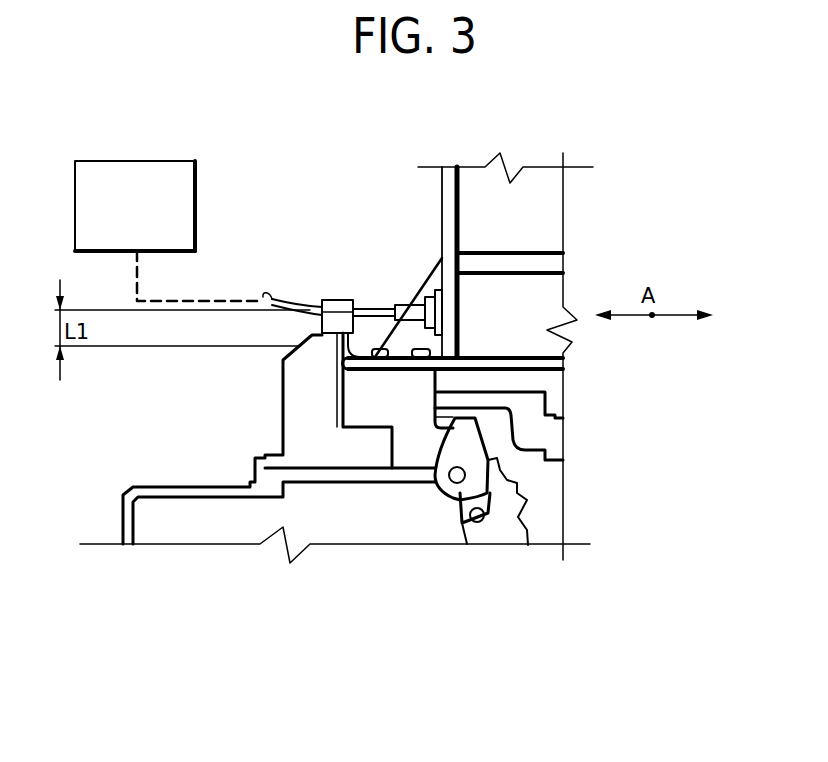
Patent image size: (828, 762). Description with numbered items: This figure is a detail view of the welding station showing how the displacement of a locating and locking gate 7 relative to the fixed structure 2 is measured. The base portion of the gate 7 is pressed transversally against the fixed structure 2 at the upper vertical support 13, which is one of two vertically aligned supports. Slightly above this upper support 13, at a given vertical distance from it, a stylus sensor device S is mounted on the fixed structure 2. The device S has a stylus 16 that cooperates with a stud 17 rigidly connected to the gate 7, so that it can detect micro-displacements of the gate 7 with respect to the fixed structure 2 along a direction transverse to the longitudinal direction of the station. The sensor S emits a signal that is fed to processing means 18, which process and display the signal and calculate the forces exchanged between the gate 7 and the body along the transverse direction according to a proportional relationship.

The fixed structure 2 is at (278, 407).
The locating and locking gate 7 is at (535, 212).
The upper vertical support 13 is at (355, 371).
The stylus 16 is at (373, 307).
The stud 17 is at (412, 293).
The processing means 18 is at (193, 161).
The stylus sensor device S is at (337, 295).